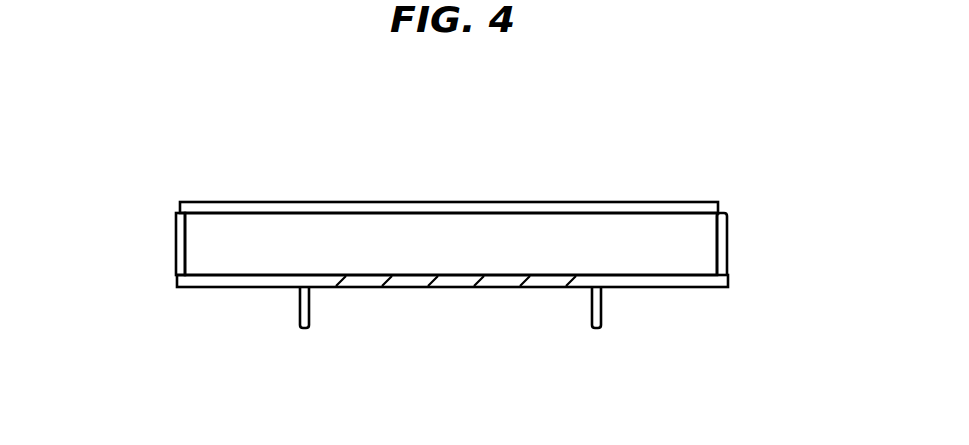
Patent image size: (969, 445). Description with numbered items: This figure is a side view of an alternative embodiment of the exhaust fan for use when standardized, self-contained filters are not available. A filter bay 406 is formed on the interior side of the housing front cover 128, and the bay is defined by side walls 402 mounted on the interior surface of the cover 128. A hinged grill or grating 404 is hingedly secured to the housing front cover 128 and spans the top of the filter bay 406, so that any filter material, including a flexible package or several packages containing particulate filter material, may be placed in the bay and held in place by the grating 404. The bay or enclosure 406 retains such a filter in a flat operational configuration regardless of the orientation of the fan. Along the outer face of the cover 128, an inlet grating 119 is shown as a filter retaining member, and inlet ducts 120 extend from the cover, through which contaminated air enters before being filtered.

The hinged grill or grating 404 is at (605, 202).
The filter bay 406 is at (248, 223).
The side walls 402 is at (729, 233).
The housing front cover 128 is at (177, 278).
The inlet grating 119 is at (408, 280).
The inlet duct 120 is at (602, 313).